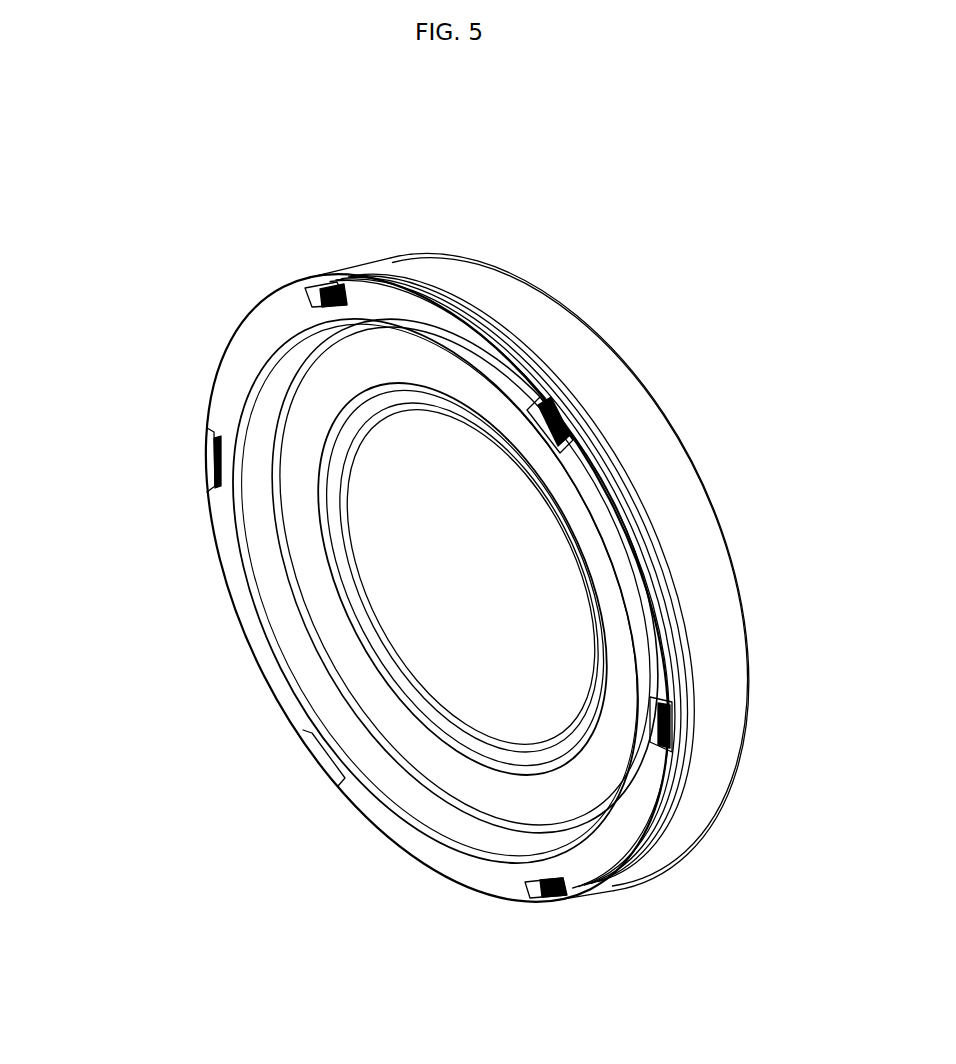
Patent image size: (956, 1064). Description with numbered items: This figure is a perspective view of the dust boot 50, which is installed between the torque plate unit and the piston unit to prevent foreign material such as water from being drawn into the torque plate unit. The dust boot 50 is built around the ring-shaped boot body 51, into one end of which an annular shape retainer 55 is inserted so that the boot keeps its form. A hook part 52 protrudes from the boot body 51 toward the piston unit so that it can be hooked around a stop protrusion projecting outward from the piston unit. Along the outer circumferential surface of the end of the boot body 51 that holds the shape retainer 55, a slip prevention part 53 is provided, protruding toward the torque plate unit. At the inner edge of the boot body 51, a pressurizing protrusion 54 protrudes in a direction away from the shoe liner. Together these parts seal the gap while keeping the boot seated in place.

The dust boot 50 is at (560, 266).
The boot body 51 is at (704, 571).
The hook part 52 is at (278, 648).
The slip prevention part 53 is at (620, 507).
The pressurizing protrusion 54 is at (348, 416).
The shape retainer 55 is at (322, 275).